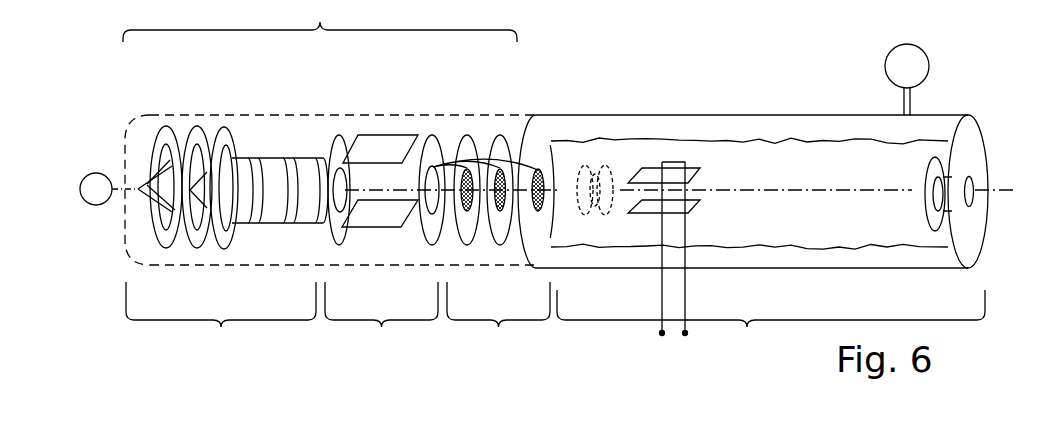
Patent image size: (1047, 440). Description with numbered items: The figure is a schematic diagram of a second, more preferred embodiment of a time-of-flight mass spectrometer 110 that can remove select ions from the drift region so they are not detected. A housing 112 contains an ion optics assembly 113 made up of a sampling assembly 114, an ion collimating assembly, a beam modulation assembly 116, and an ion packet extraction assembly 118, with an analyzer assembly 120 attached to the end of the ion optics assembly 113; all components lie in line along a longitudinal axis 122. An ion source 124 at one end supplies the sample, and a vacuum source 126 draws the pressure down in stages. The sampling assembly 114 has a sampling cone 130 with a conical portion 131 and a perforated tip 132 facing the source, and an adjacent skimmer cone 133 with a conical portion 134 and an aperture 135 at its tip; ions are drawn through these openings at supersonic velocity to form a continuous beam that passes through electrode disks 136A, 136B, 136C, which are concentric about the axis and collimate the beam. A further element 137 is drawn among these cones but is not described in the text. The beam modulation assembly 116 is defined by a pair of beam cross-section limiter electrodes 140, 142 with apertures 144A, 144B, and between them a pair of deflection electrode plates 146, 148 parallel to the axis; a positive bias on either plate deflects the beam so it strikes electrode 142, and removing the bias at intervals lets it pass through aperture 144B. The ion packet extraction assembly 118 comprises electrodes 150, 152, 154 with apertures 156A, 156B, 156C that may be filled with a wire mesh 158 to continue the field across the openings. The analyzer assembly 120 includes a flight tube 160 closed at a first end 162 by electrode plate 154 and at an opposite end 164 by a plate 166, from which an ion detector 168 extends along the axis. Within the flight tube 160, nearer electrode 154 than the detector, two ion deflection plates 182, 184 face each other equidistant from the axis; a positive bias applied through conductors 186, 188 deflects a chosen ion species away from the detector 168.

The time-of-flight mass spectrometer 110 is at (762, 70).
The housing 112 is at (137, 122).
The ion optics assembly 113 is at (320, 21).
The sampling assembly 114 is at (221, 318).
The beam modulation assembly 116 is at (381, 318).
The ion packet extraction assembly 118 is at (498, 318).
The analyzer assembly 120 is at (771, 322).
The longitudinal axis 122 is at (817, 194).
The ion source 124 is at (82, 183).
The vacuum source 126 is at (907, 79).
The sampling cone 130 is at (165, 127).
The conical portion 131 is at (147, 185).
The perforated tip 132 is at (147, 184).
The skimmer cone 133 is at (195, 127).
The conical portion 134 is at (168, 183).
The aperture 135 is at (186, 192).
The electrode disk 136A is at (244, 160).
The electrode disk 136B is at (274, 160).
The electrode disk 136C is at (313, 157).
The third lens 137 is at (222, 128).
The beam cross-section limiter electrode 140 is at (340, 135).
The beam cross-section limiter electrode 142 is at (432, 135).
The aperture 144A is at (337, 221).
The aperture 144B is at (432, 224).
The deflection electrode plate 146 is at (380, 149).
The deflection electrode plate 148 is at (380, 213).
The electrode 150 is at (472, 188).
The electrode 152 is at (515, 183).
The electrode plate 154 is at (573, 220).
The aperture 156A is at (463, 242).
The aperture 156B is at (503, 242).
The aperture 156C is at (547, 226).
The wire mesh 158 is at (428, 167).
The flight tube 160 is at (752, 168).
The first end 162 is at (531, 114).
The opposite end 164 is at (969, 113).
The plate 166 is at (980, 218).
The ion detector 168 is at (927, 208).
The ion deflection plate 182 is at (700, 171).
The ion deflection plate 184 is at (700, 203).
The conductor 186 is at (687, 299).
The conductor 188 is at (660, 299).